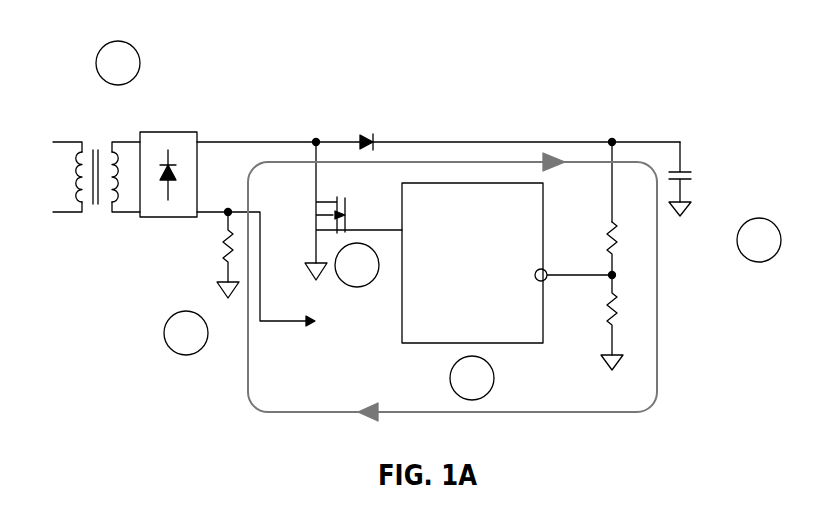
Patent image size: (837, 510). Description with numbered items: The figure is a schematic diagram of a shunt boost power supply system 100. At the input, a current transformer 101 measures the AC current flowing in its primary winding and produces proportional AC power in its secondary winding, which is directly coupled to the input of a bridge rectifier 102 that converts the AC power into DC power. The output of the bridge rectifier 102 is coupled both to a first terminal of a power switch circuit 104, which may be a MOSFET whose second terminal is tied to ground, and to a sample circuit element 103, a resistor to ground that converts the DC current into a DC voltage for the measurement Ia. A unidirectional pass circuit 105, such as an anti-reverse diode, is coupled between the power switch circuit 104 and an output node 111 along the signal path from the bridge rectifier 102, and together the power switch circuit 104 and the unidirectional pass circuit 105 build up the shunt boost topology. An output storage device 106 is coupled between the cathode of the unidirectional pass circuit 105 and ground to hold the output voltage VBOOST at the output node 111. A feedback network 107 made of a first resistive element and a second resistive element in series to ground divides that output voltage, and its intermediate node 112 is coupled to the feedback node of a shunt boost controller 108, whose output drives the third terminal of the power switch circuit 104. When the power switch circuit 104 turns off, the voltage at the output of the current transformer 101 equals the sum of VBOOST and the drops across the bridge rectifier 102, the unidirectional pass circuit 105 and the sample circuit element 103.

The shunt boost power supply system 100 is at (753, 122).
The current transformer 101 is at (100, 205).
The bridge rectifier 102 is at (197, 132).
The sample circuit element 103 is at (222, 250).
The power switch circuit 104 is at (337, 198).
The unidirectional pass circuit 105 is at (375, 137).
The output storage device 106 is at (695, 168).
The feedback network 107 is at (708, 225).
The shunt boost controller 108 is at (462, 183).
The output node 111 is at (612, 140).
The intermediate node 112 is at (614, 278).